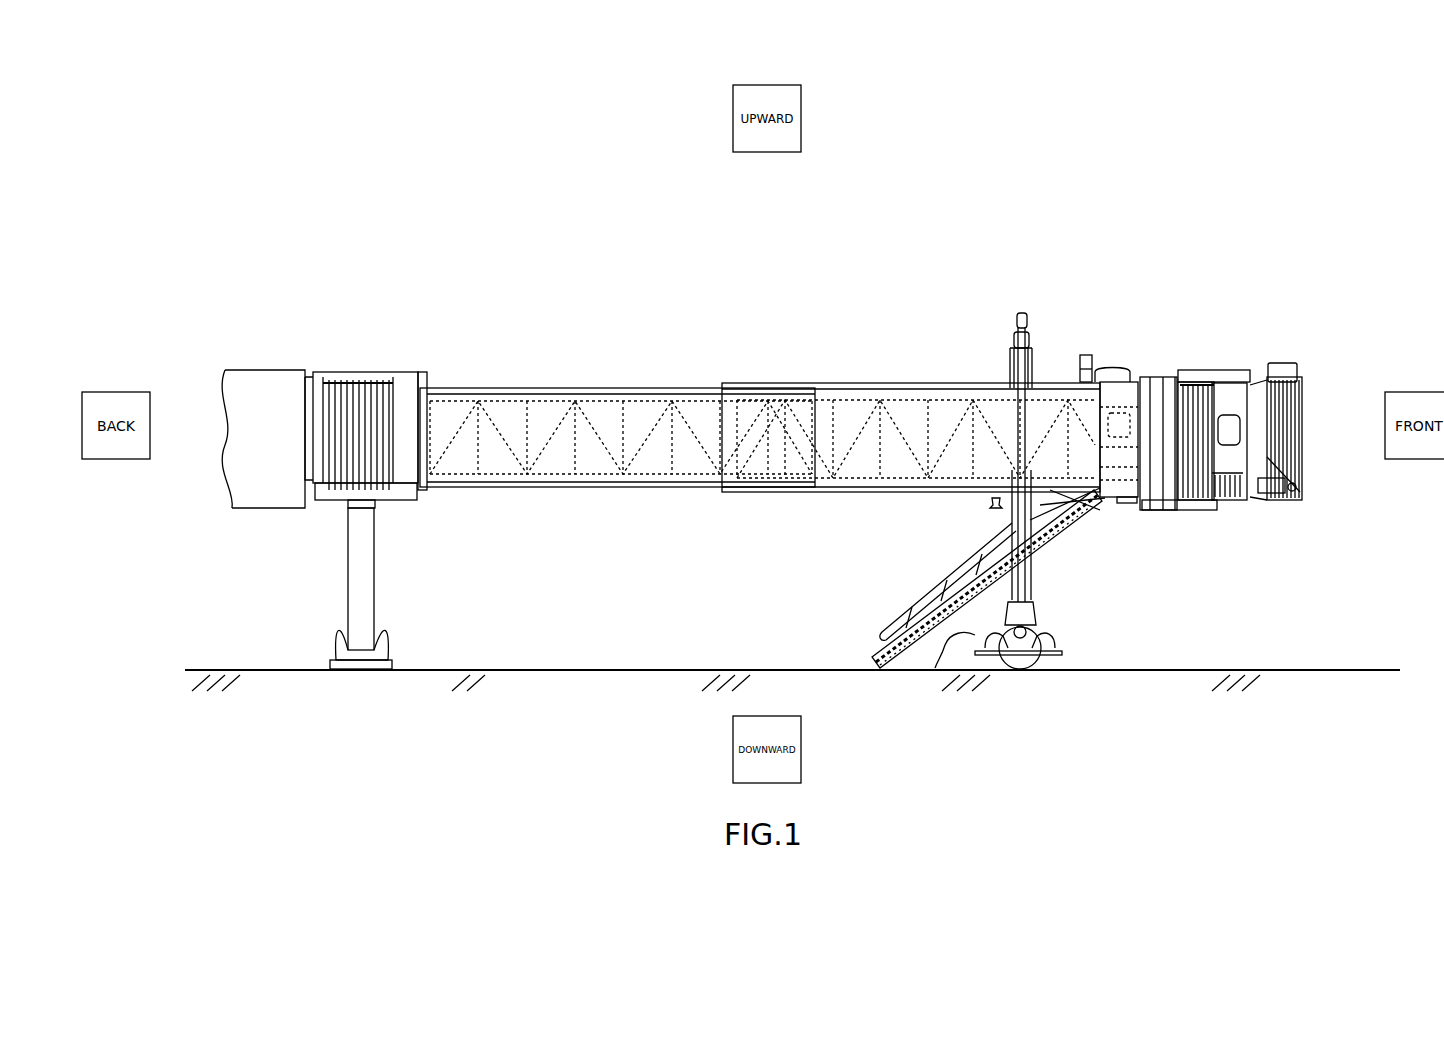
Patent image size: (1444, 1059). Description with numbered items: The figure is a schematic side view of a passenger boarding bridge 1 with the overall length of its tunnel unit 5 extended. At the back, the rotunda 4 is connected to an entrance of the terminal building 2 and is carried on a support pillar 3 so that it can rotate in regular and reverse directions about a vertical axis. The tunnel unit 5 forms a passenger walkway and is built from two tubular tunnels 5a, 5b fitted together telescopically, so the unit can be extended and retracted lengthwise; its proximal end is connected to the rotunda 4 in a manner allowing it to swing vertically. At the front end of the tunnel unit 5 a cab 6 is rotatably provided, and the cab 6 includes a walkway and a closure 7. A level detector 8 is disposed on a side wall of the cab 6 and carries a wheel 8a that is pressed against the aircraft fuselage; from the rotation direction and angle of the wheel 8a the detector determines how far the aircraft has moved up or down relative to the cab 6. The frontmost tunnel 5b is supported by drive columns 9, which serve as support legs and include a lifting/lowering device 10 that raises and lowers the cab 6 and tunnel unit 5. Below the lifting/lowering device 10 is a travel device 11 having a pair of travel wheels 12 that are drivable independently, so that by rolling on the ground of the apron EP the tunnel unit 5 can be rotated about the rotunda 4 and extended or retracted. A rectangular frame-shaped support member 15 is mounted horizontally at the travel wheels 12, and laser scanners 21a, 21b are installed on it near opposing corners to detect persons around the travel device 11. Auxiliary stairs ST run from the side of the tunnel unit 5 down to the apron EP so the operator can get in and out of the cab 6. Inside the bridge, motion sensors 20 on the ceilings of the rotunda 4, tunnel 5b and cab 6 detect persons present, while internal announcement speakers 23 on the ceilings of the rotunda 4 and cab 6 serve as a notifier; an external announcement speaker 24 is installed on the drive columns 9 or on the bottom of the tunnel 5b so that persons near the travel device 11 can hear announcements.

The passenger boarding bridge 1 is at (527, 300).
The terminal building 2 is at (264, 370).
The support pillar 3 is at (376, 556).
The rotunda 4 is at (336, 372).
The tunnel unit 5 is at (760, 359).
The tunnel 5a is at (665, 388).
The tunnel 5b is at (911, 389).
The cab 6 is at (1221, 343).
The closure 7 is at (1286, 363).
The level detector 8 is at (1272, 495).
The wheel 8a is at (1292, 495).
The drive columns 9 is at (1022, 310).
The lifting/lowering device 10 is at (1043, 385).
The travel device 11 is at (1024, 630).
The travel wheels 12 is at (1045, 662).
The support member 15 is at (1058, 650).
The motion sensors 20 is at (380, 372).
The laser scanner 21a is at (1040, 620).
The laser scanner 21b is at (946, 680).
The announcement speakers 23 is at (346, 372).
The announcement speaker 24 is at (994, 506).
The auxiliary stairs ST is at (930, 586).
The apron EP is at (638, 668).